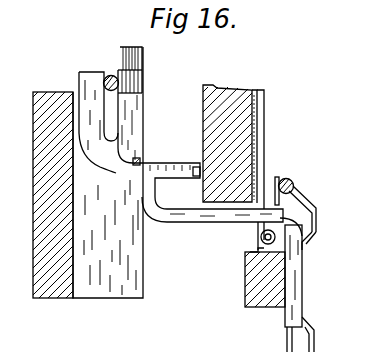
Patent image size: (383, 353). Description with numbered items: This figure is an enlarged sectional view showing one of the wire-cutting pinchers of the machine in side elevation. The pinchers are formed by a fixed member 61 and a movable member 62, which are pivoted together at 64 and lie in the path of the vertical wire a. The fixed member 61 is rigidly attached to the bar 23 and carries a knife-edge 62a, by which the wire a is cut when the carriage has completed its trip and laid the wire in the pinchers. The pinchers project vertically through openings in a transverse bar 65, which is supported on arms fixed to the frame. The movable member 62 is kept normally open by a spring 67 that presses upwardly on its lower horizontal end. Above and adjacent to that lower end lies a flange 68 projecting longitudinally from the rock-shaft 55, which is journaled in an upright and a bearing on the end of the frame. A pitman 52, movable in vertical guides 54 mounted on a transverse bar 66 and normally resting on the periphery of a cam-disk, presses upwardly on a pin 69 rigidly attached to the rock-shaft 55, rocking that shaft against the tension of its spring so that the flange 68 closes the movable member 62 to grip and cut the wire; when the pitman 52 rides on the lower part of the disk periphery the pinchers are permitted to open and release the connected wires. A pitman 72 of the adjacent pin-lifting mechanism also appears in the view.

The transverse bar 65 is at (50, 69).
The movable member 62 is at (112, 173).
The vertical wire a is at (104, 76).
The knife-edge 62a is at (112, 75).
The fixed member 61 is at (133, 108).
The pivot 64 is at (141, 161).
The bar 23 is at (203, 112).
The pitmen 72 is at (262, 120).
The flange 68 is at (277, 177).
The rock-shaft 55 is at (293, 178).
The pin 69 is at (312, 196).
The pitman 52 is at (311, 233).
The vertical guides 54 is at (303, 271).
The transverse bar 66 is at (245, 285).
The spring 67 is at (258, 233).